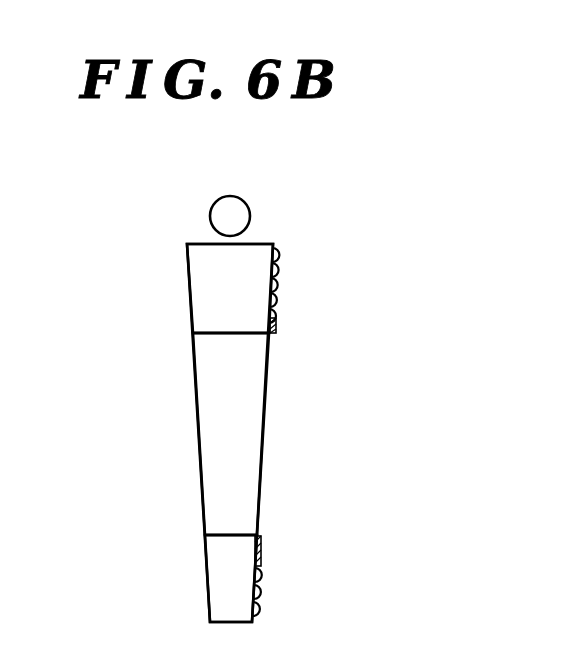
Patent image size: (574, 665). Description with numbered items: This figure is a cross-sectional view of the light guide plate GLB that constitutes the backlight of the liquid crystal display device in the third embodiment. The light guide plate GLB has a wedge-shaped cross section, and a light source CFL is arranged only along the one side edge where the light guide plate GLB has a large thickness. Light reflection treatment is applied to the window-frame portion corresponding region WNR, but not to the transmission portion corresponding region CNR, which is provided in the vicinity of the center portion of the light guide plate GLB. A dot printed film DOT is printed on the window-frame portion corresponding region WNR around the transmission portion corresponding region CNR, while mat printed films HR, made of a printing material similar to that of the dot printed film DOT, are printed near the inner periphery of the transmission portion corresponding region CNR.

The light guide plate GLB is at (212, 243).
The light source CFL is at (250, 212).
The window-frame portion corresponding region WNR is at (205, 284).
The dot printed film DOT is at (275, 290).
The mat printed film HR is at (276, 326).
The transmission portion corresponding region CNR is at (250, 415).